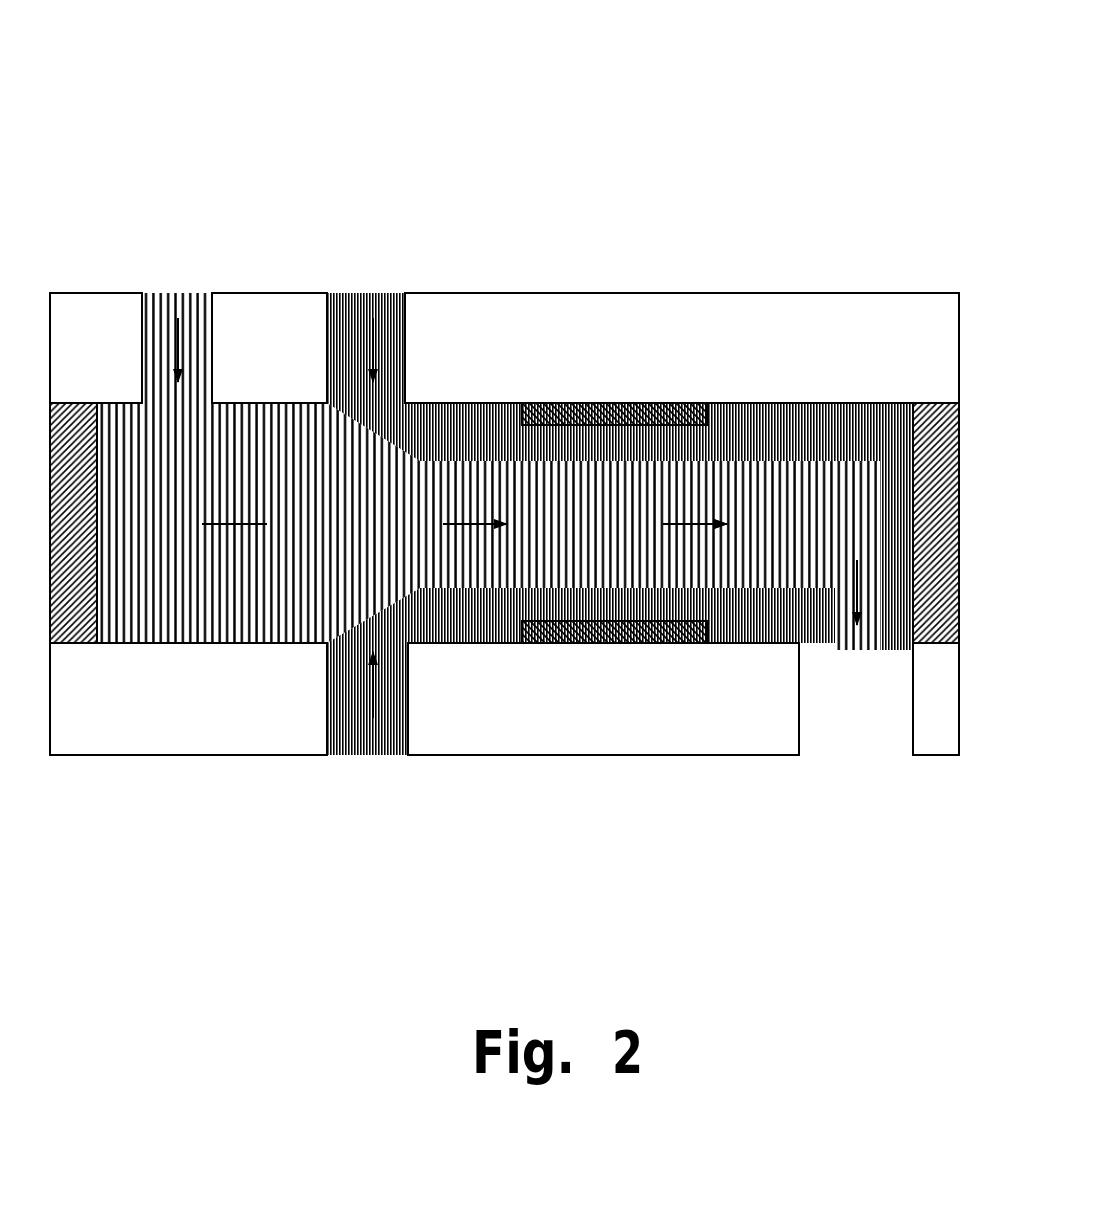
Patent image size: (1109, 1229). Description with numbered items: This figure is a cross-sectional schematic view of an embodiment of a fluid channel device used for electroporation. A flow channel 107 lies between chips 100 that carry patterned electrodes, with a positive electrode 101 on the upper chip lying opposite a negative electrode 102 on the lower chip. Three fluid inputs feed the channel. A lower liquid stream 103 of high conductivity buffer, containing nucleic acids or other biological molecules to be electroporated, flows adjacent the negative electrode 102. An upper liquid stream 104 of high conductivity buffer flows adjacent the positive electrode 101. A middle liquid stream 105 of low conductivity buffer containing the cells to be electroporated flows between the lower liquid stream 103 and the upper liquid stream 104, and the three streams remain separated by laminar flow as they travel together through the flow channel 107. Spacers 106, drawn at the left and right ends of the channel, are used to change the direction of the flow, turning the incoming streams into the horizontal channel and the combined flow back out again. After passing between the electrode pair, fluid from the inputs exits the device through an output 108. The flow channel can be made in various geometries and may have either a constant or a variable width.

The chips 100 is at (811, 322).
The positive electrode 101 is at (590, 414).
The negative electrode 102 is at (566, 632).
The lower liquid stream 103 is at (385, 710).
The upper liquid stream 104 is at (398, 322).
The middle liquid stream 105 is at (204, 322).
The spacers 106 is at (85, 623).
The flow channel 107 is at (455, 493).
The output 108 is at (855, 658).